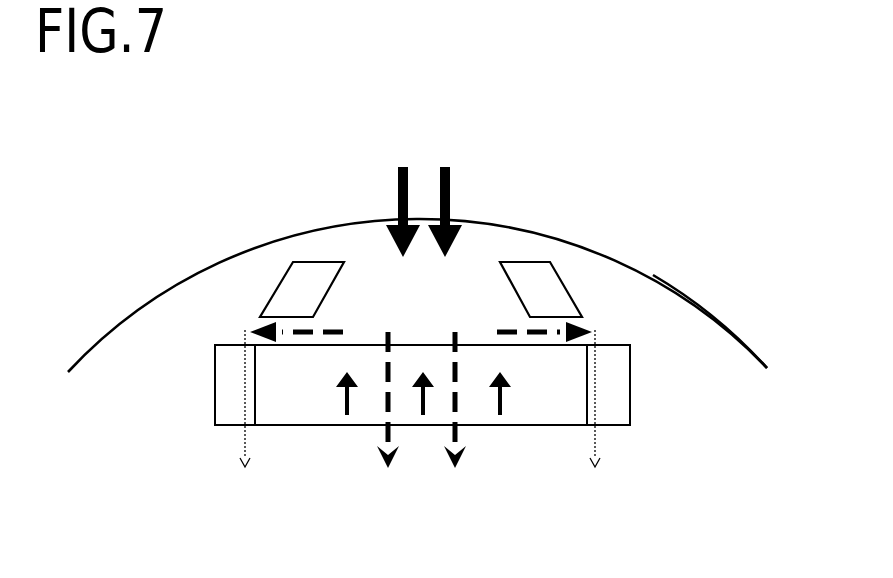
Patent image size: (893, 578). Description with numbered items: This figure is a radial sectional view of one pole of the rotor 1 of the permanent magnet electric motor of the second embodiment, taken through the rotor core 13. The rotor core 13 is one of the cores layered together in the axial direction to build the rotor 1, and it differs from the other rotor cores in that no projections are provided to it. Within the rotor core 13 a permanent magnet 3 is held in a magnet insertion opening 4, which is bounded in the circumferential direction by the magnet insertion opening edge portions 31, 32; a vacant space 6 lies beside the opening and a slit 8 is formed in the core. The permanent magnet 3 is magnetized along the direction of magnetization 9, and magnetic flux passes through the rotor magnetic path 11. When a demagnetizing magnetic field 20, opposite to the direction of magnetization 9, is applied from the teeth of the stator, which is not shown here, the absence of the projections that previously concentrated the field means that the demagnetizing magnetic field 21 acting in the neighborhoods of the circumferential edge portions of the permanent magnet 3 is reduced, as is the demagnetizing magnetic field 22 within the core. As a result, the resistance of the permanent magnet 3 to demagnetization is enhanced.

The rotor 1 is at (653, 277).
The permanent magnet 3 is at (287, 397).
The magnet insertion opening 4 is at (525, 425).
The vacant space 6 is at (615, 387).
The slit 8 is at (510, 280).
The direction of magnetization 9 is at (500, 400).
The rotor magnetic path 11 is at (542, 323).
The rotor core 13 is at (715, 350).
The demagnetizing magnetic field 20 is at (448, 197).
The demagnetizing magnetic field 21 is at (228, 363).
The demagnetizing magnetic field 22 is at (453, 403).
The magnet insertion opening edge portion 31 is at (243, 388).
The magnet insertion opening edge portion 32 is at (230, 423).